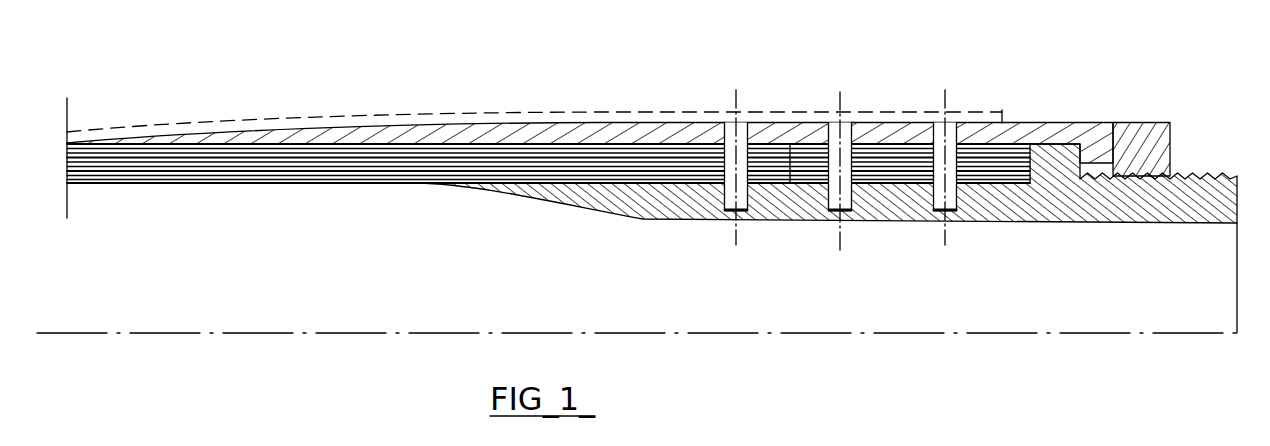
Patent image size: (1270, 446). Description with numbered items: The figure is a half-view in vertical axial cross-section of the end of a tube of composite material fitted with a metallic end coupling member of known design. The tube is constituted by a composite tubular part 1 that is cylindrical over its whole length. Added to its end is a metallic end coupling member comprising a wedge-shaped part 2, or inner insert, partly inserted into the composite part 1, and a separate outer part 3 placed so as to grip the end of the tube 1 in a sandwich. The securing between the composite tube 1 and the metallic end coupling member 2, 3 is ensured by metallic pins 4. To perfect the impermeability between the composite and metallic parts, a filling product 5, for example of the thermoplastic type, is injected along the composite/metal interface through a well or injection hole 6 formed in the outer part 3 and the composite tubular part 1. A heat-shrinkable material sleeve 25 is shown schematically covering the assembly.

The composite tubular part 1 is at (238, 165).
The wedge-shaped part 2 is at (687, 203).
The outer part 3 is at (607, 127).
The metallic pins 4 is at (943, 137).
The filling product 5 is at (595, 183).
The injection hole 6 is at (791, 147).
The heat-shrinkable material sleeve 25 is at (527, 110).